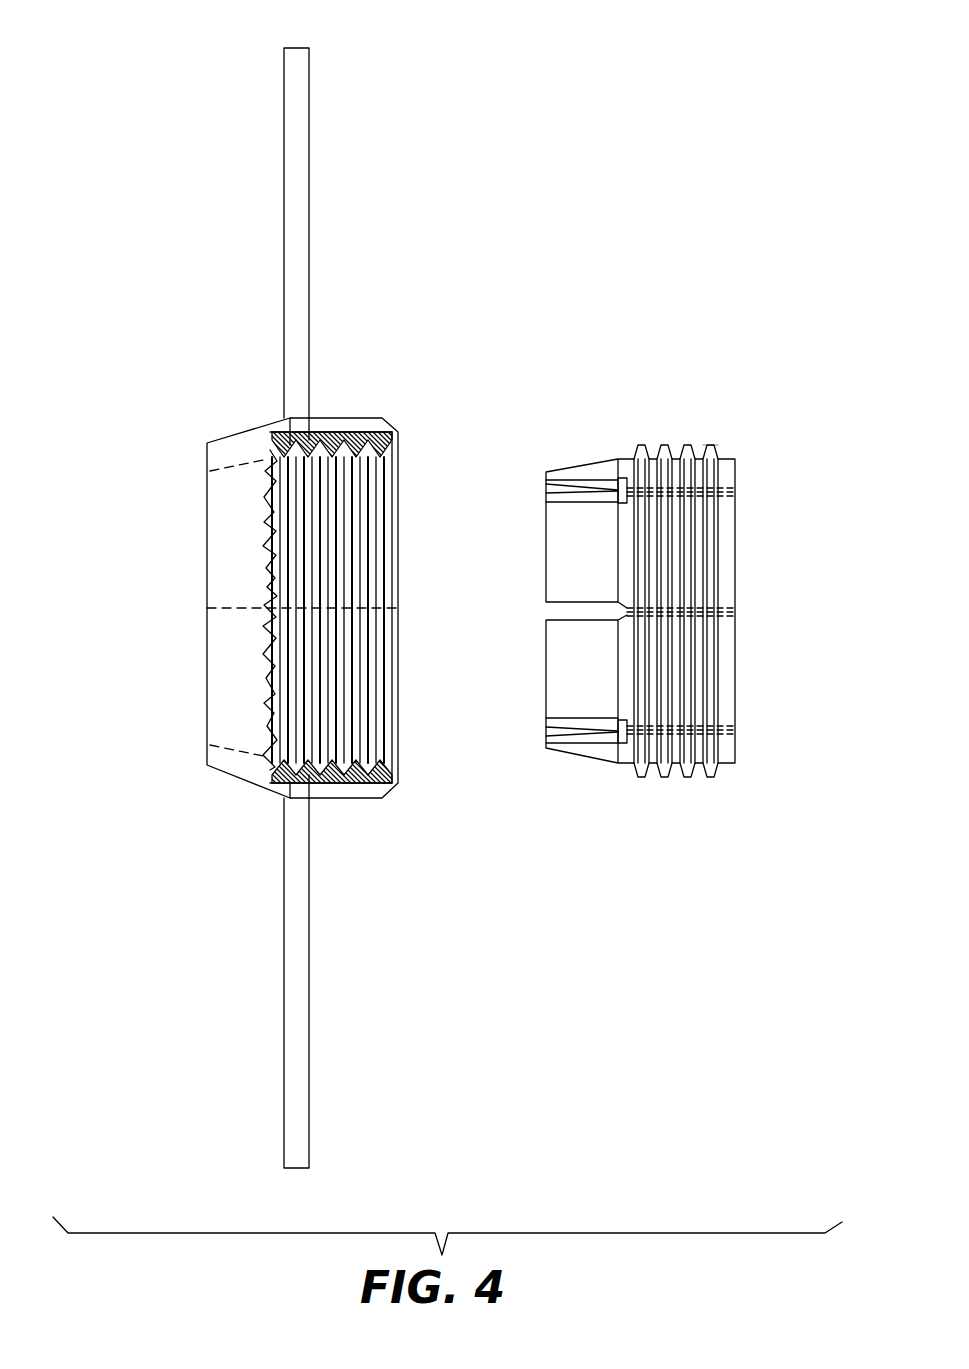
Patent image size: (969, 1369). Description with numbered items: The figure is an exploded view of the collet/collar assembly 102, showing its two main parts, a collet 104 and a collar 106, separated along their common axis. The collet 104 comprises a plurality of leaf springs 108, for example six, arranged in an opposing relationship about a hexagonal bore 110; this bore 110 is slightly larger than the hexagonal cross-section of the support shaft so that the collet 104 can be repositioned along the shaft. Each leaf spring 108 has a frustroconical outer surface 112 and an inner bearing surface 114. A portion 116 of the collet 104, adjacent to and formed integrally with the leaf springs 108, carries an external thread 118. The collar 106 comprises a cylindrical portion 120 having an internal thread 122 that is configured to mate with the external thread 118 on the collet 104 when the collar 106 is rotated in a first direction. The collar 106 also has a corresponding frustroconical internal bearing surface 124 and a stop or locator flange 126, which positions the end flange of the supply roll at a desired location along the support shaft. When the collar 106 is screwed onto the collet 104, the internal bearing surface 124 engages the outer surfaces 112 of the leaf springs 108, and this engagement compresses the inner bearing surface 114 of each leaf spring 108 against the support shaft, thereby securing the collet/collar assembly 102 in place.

The collet/collar assembly 102 is at (672, 45).
The collet 104 is at (626, 795).
The collar 106 is at (208, 783).
The leaf springs 108 is at (548, 470).
The hexagonal bore 110 is at (588, 556).
The frustroconical outer surface 112 is at (573, 464).
The inner bearing surface 114 is at (607, 482).
The portion of the collet 116 is at (686, 410).
The external thread 118 is at (713, 448).
The cylindrical portion 120 is at (384, 390).
The internal thread 122 is at (346, 448).
The frustroconical internal bearing surface 124 is at (236, 468).
The locator flange 126 is at (290, 117).